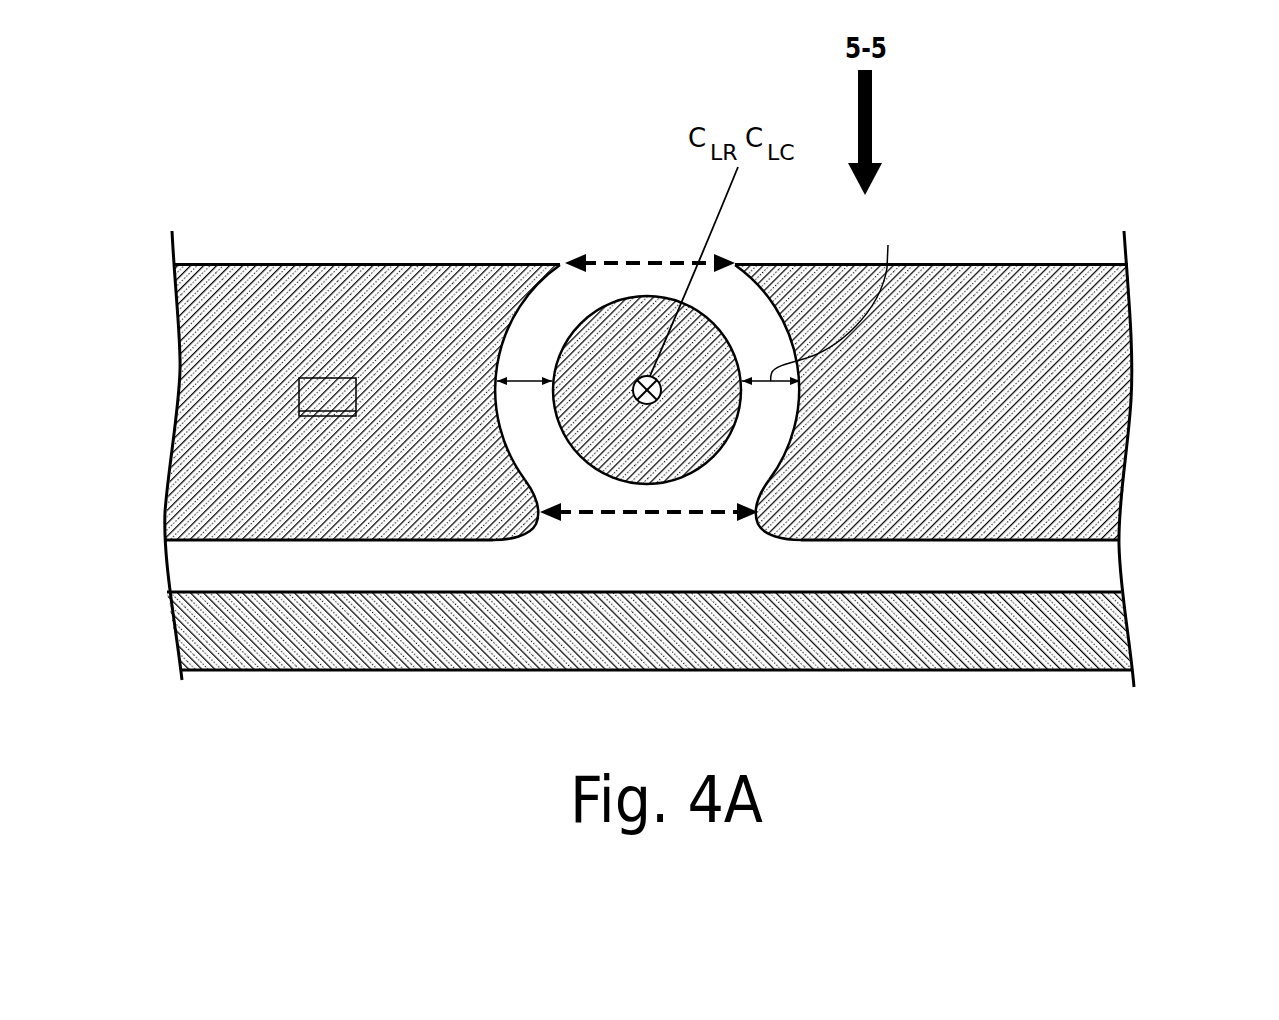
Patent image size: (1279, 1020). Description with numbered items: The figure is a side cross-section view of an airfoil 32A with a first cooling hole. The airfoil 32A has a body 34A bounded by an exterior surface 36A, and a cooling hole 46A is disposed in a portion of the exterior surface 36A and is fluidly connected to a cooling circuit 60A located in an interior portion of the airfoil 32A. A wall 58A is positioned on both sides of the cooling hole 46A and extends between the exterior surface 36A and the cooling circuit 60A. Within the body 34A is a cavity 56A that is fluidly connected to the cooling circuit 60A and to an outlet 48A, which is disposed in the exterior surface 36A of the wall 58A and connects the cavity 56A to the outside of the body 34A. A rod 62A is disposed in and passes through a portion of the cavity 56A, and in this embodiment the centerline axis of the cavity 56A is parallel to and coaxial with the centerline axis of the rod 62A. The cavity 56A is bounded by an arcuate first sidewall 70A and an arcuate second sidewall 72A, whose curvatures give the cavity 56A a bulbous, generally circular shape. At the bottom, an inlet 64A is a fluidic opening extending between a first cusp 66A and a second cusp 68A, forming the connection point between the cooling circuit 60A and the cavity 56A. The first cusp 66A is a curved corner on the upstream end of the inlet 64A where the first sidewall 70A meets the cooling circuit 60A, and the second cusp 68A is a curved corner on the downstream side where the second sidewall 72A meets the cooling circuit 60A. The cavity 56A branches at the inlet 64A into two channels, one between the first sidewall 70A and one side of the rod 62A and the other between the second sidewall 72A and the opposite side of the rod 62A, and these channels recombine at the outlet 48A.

The airfoil 32A is at (1070, 198).
The body 34A is at (965, 264).
The exterior surface 36A is at (353, 264).
The cooling hole 46A is at (524, 380).
The outlet 48A is at (660, 262).
The cavity 56A is at (783, 330).
The wall 58A is at (327, 397).
The cooling circuit 60A is at (1066, 543).
The rod 62A is at (632, 484).
The inlet 64A is at (680, 513).
The first cusp 66A is at (538, 526).
The second cusp 68A is at (754, 528).
The first sidewall 70A is at (545, 440).
The second sidewall 72A is at (753, 440).